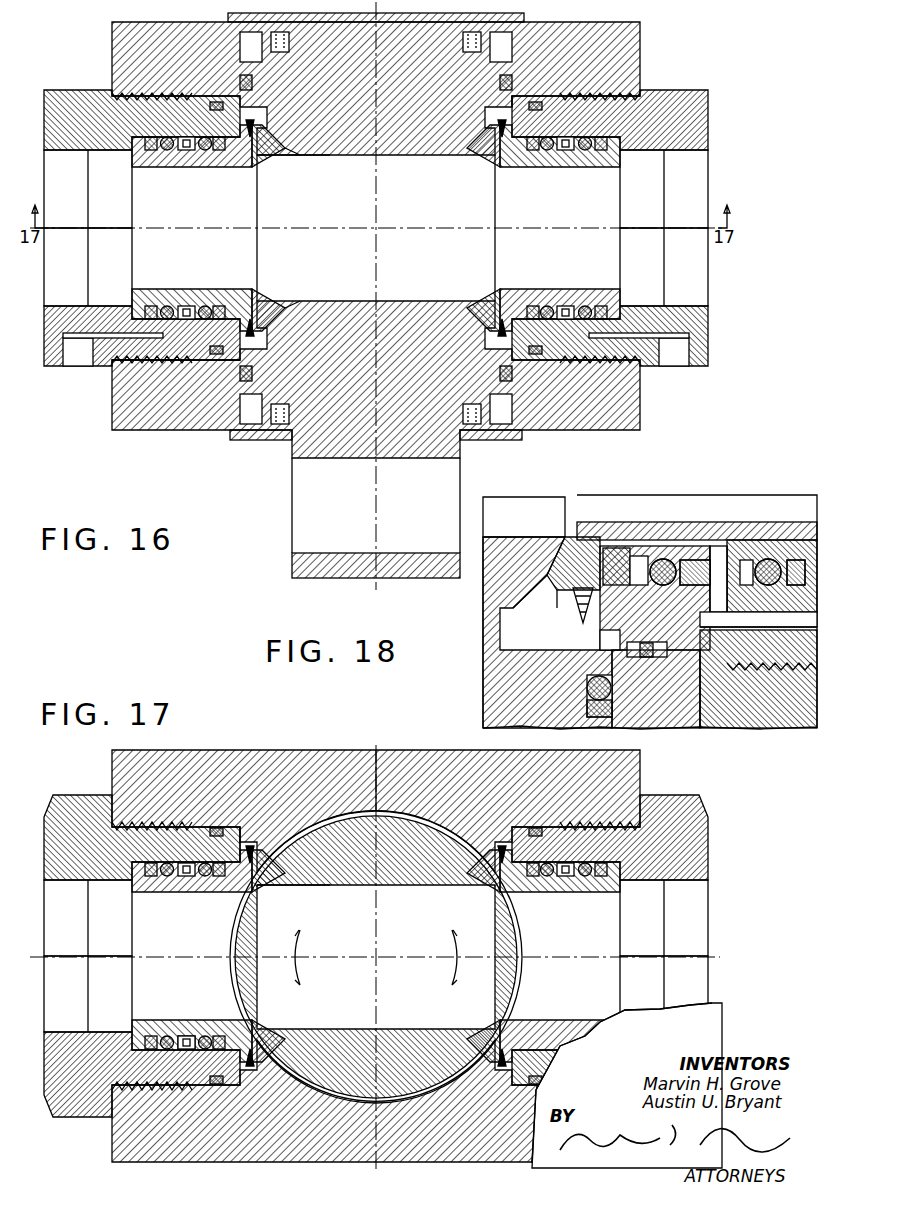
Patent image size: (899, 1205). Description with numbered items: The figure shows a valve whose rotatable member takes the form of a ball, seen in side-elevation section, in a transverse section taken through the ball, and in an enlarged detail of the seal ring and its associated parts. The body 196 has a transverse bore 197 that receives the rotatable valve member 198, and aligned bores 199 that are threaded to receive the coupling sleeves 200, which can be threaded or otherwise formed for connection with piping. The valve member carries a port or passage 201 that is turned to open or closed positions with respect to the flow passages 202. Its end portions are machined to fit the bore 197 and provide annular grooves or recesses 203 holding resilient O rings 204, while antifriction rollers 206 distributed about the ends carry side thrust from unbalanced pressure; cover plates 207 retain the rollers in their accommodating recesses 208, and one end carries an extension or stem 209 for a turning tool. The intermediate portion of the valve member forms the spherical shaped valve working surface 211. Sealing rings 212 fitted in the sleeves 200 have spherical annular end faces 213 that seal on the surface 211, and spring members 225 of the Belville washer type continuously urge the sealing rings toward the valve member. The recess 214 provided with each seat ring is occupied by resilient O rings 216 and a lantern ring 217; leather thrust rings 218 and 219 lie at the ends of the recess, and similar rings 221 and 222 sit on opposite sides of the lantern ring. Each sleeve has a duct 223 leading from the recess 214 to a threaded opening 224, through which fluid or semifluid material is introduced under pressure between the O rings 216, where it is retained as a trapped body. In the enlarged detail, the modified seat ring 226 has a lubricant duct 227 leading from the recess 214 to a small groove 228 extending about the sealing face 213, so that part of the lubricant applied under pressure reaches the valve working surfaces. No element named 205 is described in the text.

In FIG. 16, the body 196 is at (628, 396).
In FIG. 17, the body 196 is at (310, 800).
In FIG. 18, the body 196 is at (728, 700).
In FIG. 16, the transverse bore 197 is at (592, 60).
In FIG. 17, the transverse bore 197 is at (386, 800).
In FIG. 18, the transverse bore 197 is at (636, 705).
In FIG. 16, the rotatable valve member 198 is at (388, 156).
In FIG. 17, the rotatable valve member 198 is at (398, 886).
In FIG. 18, the rotatable valve member 198 is at (492, 685).
In FIG. 16, the aligned bores 199 is at (202, 380).
In FIG. 17, the aligned bores 199 is at (252, 830).
In FIG. 18, the aligned bores 199 is at (690, 700).
In FIG. 16, the coupling sleeves 200 is at (78, 108).
In FIG. 17, the coupling sleeves 200 is at (75, 806).
In FIG. 18, the coupling sleeves 200 is at (768, 672).
In FIG. 16, the port or passage 201 is at (337, 156).
In FIG. 17, the port or passage 201 is at (330, 886).
In FIG. 18, the port or passage 201 is at (498, 537).
In FIG. 16, the flow passages 202 is at (120, 282).
In FIG. 17, the flow passages 202 is at (695, 935).
In FIG. 16, the annular grooves or recesses 203 is at (253, 88).
In FIG. 17, the annular grooves or recesses 203 is at (376, 956).
In FIG. 18, the annular grooves or recesses 203 is at (590, 674).
In FIG. 16, the resilient O rings 204 is at (240, 80).
In FIG. 18, the resilient O rings 204 is at (591, 714).
In FIG. 16, the recess 205 is at (376, 224).
In FIG. 16, the antifriction rollers 206 is at (246, 438).
In FIG. 16, the cover plates 207 is at (524, 19).
In FIG. 16, the recesses 208 is at (284, 44).
In FIG. 16, the extension or stem 209 is at (318, 566).
In FIG. 16, the spherical shaped valve working surface 211 is at (297, 152).
In FIG. 17, the spherical shaped valve working surface 211 is at (292, 1058).
In FIG. 18, the spherical shaped valve working surface 211 is at (500, 600).
In FIG. 16, the sealing rings 212 is at (187, 165).
In FIG. 17, the sealing rings 212 is at (187, 893).
In FIG. 18, the sealing rings 212 is at (720, 546).
In FIG. 16, the annular end faces 213 is at (264, 150).
In FIG. 17, the annular end faces 213 is at (264, 876).
In FIG. 18, the annular end faces 213 is at (552, 550).
In FIG. 16, the recess 214 is at (570, 152).
In FIG. 17, the recess 214 is at (218, 1036).
In FIG. 18, the recess 214 is at (780, 540).
In FIG. 16, the resilient O rings 216 is at (531, 152).
In FIG. 17, the resilient O rings 216 is at (162, 1036).
In FIG. 18, the resilient O rings 216 is at (663, 558).
In FIG. 16, the lantern ring 217 is at (549, 152).
In FIG. 17, the lantern ring 217 is at (188, 1036).
In FIG. 18, the lantern ring 217 is at (700, 558).
In FIG. 16, the leather thrust ring 218 is at (218, 151).
In FIG. 17, the leather thrust ring 218 is at (155, 877).
In FIG. 18, the leather thrust ring 218 is at (616, 548).
In FIG. 16, the leather thrust ring 219 is at (151, 151).
In FIG. 17, the leather thrust ring 219 is at (220, 877).
In FIG. 18, the leather thrust ring 219 is at (796, 558).
In FIG. 16, the ring 221 is at (548, 308).
In FIG. 17, the ring 221 is at (556, 877).
In FIG. 18, the ring 221 is at (700, 540).
In FIG. 16, the ring 222 is at (583, 308).
In FIG. 17, the ring 222 is at (588, 877).
In FIG. 16, the duct 223 is at (633, 334).
In FIG. 18, the duct 223 is at (790, 640).
In FIG. 16, the opening 224 is at (76, 362).
In FIG. 16, the spring members 225 is at (500, 128).
In FIG. 17, the spring members 225 is at (376, 956).
In FIG. 18, the spring members 225 is at (574, 610).
In FIG. 18, the modified seat ring 226 is at (604, 540).
In FIG. 18, the lubricant duct 227 is at (640, 540).
In FIG. 18, the small groove 228 is at (567, 590).